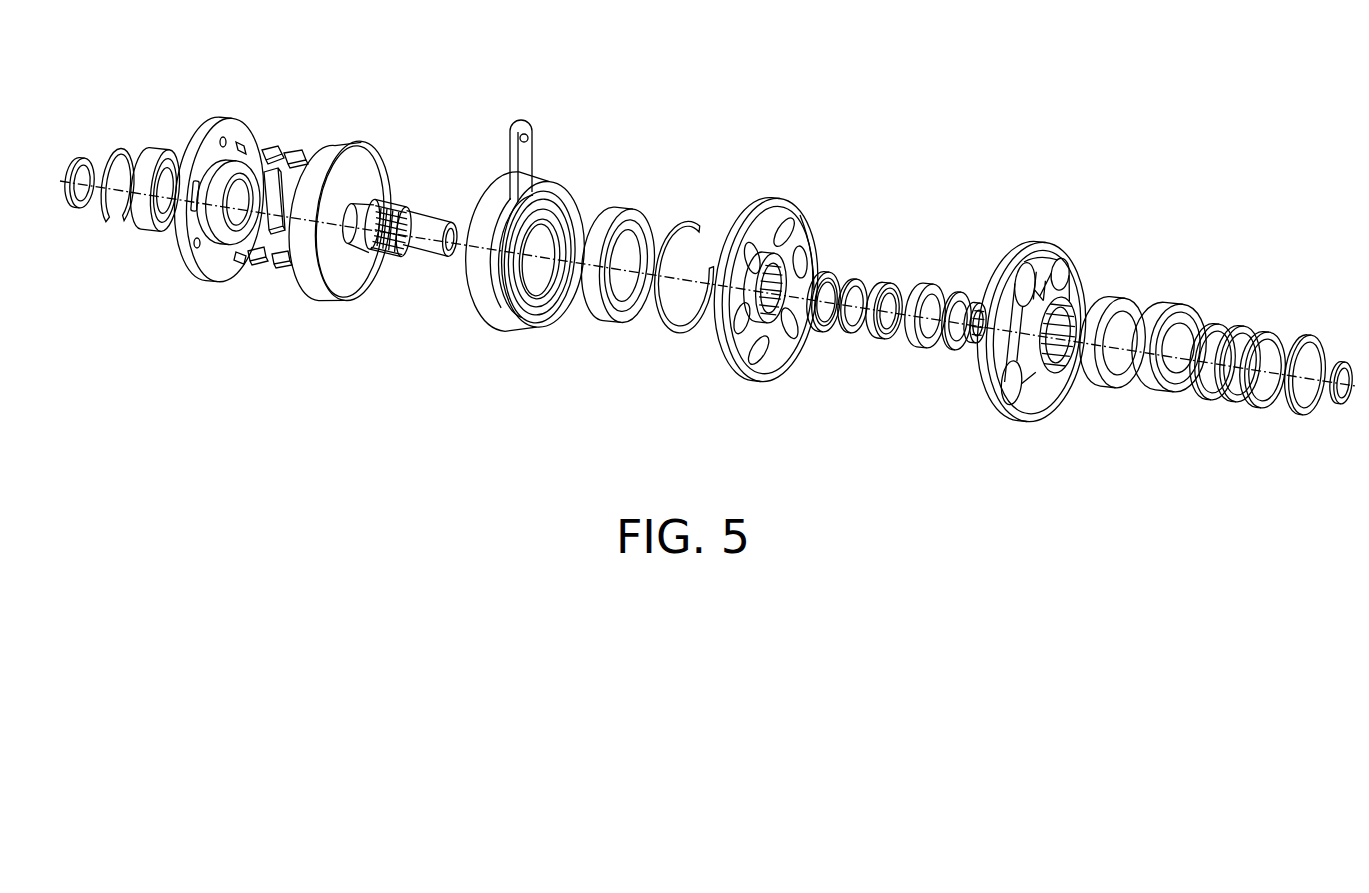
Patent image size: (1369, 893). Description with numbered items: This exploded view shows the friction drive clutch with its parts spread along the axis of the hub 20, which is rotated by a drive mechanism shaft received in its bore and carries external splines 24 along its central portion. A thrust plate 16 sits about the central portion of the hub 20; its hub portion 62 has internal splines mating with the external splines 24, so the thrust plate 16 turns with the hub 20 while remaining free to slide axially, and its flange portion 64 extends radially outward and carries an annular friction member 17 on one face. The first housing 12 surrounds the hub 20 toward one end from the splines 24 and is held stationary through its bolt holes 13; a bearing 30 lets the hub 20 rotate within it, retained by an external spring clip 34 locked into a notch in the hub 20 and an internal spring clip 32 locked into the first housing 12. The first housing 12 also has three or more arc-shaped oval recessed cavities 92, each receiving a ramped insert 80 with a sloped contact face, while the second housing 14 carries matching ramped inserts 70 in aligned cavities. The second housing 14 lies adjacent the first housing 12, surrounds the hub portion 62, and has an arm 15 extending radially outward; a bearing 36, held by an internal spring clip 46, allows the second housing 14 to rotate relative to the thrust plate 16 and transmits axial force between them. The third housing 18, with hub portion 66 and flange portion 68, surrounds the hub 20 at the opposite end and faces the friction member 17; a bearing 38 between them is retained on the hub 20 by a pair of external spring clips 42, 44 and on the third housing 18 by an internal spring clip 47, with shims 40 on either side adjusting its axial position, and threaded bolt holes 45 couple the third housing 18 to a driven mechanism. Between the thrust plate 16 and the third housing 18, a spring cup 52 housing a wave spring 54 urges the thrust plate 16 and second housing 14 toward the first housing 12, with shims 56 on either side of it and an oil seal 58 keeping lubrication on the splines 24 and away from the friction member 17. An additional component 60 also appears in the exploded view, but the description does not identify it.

The first housing 12 is at (236, 135).
The bolt holes 13 is at (221, 136).
The second housing 14 is at (500, 323).
The arm 15 is at (531, 150).
The thrust plate 16 is at (760, 205).
The annular friction member 17 is at (802, 214).
The third housing 18 is at (1078, 278).
The hub 20 is at (440, 220).
The external splines 24 is at (403, 205).
The bearing 30 is at (160, 150).
The internal spring clip 32 is at (120, 145).
The external spring clip 34 is at (81, 158).
The bearing 36 is at (614, 214).
The bearing 38 is at (1178, 316).
The shims 40 is at (1114, 384).
The external spring clip 42 is at (975, 338).
The external spring clip 44 is at (1342, 406).
The threaded bolt holes 45 is at (1072, 302).
The internal spring clip 46 is at (693, 222).
The internal spring clip 47 is at (1304, 418).
The spring cup 52 is at (932, 287).
The spring 54 is at (896, 290).
The shims 56 is at (863, 282).
The oil seal 58 is at (826, 285).
The drum 60 is at (386, 160).
The hub portion 62 is at (790, 342).
The flange portion 64 is at (802, 236).
The hub portion 66 is at (1040, 393).
The flange portion 68 is at (1043, 252).
The ramped insert 70 is at (302, 155).
The ramped insert 80 is at (278, 150).
The recessed cavities 92 is at (242, 148).